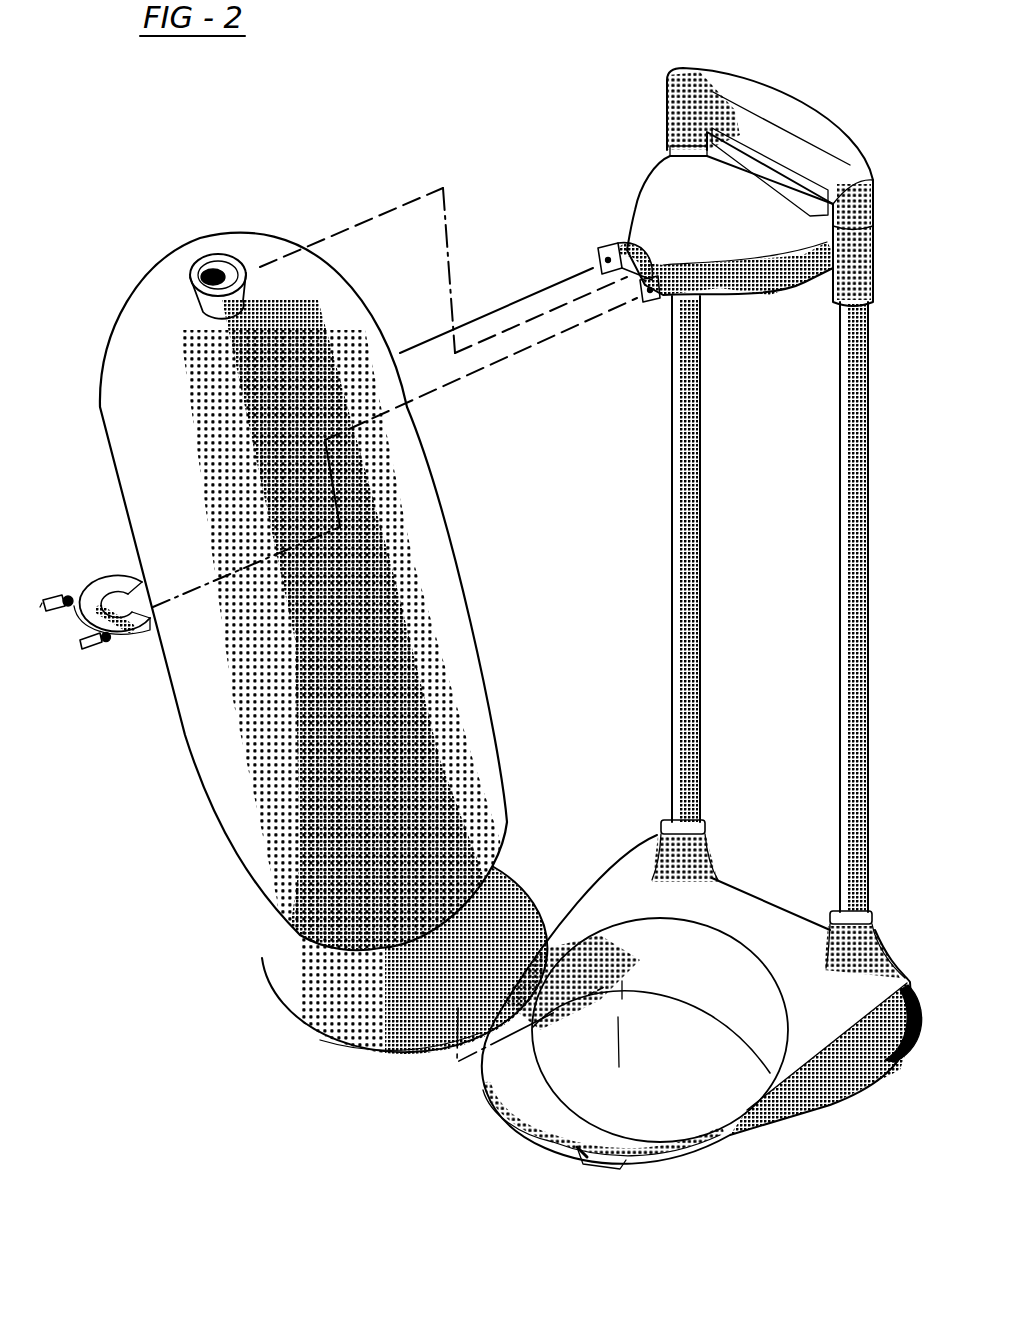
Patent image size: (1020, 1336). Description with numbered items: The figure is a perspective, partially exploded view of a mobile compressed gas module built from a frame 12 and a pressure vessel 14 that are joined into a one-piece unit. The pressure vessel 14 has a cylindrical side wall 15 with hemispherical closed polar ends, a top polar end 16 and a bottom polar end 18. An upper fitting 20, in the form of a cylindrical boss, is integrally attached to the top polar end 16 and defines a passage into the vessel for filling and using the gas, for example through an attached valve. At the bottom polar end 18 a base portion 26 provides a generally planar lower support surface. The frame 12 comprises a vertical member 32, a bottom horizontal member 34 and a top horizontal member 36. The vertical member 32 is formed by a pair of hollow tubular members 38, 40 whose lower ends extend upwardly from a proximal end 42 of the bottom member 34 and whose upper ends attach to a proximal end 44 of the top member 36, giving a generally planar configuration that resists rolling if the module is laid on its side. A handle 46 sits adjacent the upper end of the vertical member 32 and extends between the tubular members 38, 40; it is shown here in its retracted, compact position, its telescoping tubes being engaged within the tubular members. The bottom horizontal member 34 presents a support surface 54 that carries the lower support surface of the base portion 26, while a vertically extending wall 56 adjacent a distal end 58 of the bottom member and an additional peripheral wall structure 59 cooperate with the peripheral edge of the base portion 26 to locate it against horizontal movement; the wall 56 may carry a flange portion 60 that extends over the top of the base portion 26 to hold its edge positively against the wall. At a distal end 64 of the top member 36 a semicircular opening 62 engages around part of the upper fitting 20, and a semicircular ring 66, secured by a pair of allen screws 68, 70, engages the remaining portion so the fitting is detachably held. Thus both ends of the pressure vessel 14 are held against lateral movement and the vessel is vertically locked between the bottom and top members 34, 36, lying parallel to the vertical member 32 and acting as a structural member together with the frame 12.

The frame 12 is at (580, 203).
The pressure vessel 14 is at (475, 418).
The cylindrical side wall 15 is at (410, 524).
The top polar end 16 is at (165, 292).
The bottom polar end 18 is at (303, 915).
The upper fitting 20 is at (224, 262).
The base portion 26 is at (300, 999).
The vertical member 32 is at (660, 468).
The bottom horizontal member 34 is at (843, 1103).
The top horizontal member 36 is at (640, 181).
The tubular member 38 is at (852, 745).
The tubular member 40 is at (685, 568).
The proximal end of bottom member 42 is at (750, 912).
The proximal end of top member 44 is at (677, 147).
The handle 46 is at (790, 112).
The support surface 54 is at (688, 1102).
The vertically extending wall 56 is at (520, 1123).
The distal end of bottom member 58 is at (603, 1167).
The peripheral wall structure 59 is at (627, 957).
The flange portion 60 is at (487, 1097).
The semicircular opening 62 is at (646, 283).
The distal end of top member 64 is at (598, 246).
The semicircular ring 66 is at (106, 580).
The allen screw 68 is at (104, 646).
The allen screw 70 is at (55, 603).